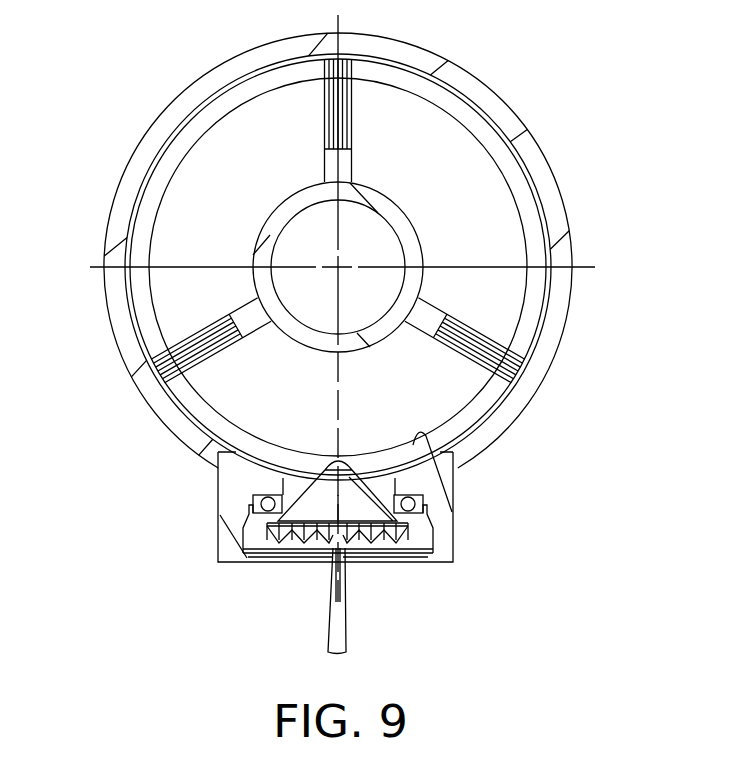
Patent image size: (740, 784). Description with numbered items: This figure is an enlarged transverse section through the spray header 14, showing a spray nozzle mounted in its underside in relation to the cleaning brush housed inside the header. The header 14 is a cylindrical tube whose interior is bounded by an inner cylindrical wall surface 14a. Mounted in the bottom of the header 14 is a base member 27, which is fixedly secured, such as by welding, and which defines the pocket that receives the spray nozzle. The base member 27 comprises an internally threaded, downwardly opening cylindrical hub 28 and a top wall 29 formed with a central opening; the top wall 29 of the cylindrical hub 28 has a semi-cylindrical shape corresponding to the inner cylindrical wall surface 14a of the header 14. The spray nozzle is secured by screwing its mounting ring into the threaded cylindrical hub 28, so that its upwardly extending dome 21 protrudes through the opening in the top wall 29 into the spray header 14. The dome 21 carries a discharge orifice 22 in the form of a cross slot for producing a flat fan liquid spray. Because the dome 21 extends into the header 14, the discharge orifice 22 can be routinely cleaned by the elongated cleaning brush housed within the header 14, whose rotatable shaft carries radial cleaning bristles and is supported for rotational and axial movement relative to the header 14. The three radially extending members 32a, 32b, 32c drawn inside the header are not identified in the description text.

The spray header 14 is at (540, 145).
The inner cylindrical wall surface 14a is at (543, 217).
The spoke 32a is at (340, 123).
The spoke 32b is at (187, 347).
The spoke 32c is at (477, 342).
The dome 21 is at (278, 485).
The discharge orifice 22 is at (378, 446).
The base member 27 is at (232, 502).
The cylindrical hub 28 is at (447, 537).
The top wall 29 is at (457, 457).